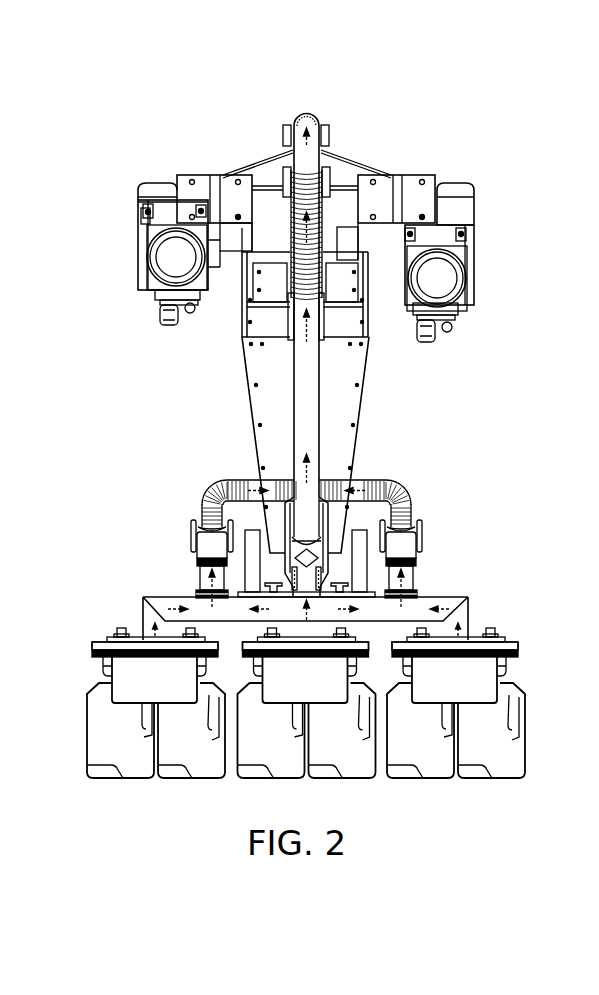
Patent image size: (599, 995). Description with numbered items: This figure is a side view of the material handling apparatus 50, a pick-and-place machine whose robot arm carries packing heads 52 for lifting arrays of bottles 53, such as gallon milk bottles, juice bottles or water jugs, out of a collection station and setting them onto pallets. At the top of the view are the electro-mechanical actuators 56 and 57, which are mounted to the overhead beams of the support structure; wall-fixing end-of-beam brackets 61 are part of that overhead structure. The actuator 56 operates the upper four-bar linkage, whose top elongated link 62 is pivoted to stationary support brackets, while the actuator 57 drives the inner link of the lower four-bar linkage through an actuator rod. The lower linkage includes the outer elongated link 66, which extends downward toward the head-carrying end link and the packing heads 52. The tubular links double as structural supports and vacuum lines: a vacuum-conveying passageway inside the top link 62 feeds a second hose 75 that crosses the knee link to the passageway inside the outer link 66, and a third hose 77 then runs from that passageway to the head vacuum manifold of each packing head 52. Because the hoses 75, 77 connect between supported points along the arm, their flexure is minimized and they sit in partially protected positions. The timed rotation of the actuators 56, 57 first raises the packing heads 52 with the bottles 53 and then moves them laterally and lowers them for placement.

The material handling apparatus 50 is at (417, 104).
The packing head 52 is at (454, 561).
The bottles 53 is at (550, 726).
The electro-mechanical actuator 56 is at (152, 187).
The electro-mechanical actuator 57 is at (476, 197).
The end-of-beam brackets 61 is at (198, 176).
The top elongated link 62 is at (298, 157).
The outer elongated link 66 is at (308, 396).
The second hose 75 is at (318, 167).
The third hose 77 is at (213, 487).